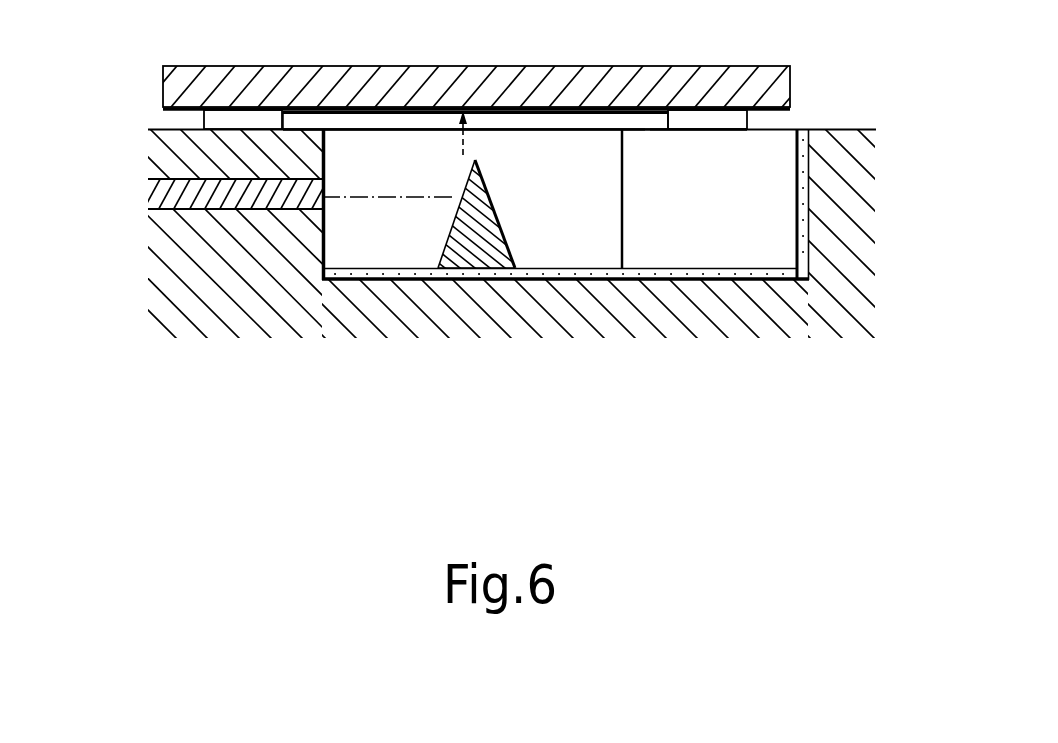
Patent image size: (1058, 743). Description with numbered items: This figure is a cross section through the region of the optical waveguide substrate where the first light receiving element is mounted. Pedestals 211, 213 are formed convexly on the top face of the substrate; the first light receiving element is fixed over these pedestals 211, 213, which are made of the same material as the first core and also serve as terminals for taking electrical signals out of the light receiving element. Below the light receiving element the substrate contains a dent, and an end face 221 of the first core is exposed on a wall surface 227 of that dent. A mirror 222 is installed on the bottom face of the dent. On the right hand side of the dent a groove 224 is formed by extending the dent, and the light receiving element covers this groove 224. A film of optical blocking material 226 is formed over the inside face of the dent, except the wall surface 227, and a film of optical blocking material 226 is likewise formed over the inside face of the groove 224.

The pedestal 211 is at (204, 120).
The pedestal 213 is at (747, 119).
The end face 221 is at (326, 189).
The mirror 222 is at (476, 268).
The groove 224 is at (710, 250).
The film of optical blocking material 226 is at (775, 201).
The wall surface 227 is at (322, 243).